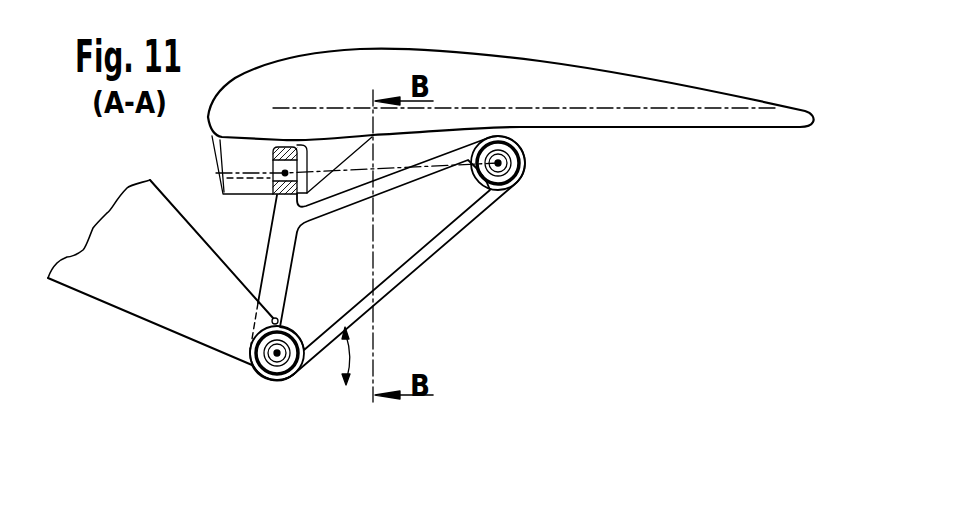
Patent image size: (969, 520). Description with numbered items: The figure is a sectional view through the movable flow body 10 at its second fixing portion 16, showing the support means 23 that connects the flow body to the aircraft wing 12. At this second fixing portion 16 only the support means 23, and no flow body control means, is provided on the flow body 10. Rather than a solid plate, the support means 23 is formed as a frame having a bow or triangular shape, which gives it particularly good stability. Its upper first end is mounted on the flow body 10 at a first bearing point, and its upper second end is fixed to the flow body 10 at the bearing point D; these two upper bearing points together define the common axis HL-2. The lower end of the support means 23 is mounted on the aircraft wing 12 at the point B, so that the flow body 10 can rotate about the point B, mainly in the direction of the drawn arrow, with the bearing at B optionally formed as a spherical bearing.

The movable flow body 10 is at (457, 80).
The aircraft wing 12 is at (172, 237).
The second fixing portion 16 is at (226, 393).
The support means 23 is at (387, 250).
The bearing point B is at (277, 357).
The bearing point D is at (498, 160).
The common axis HL-2 is at (383, 174).